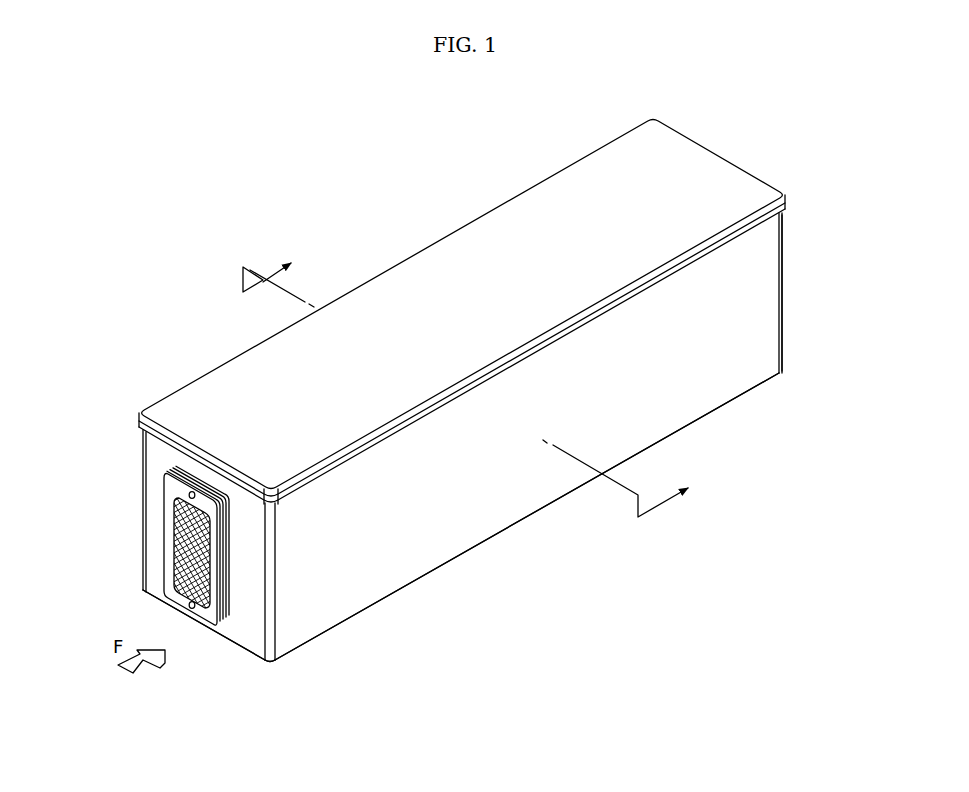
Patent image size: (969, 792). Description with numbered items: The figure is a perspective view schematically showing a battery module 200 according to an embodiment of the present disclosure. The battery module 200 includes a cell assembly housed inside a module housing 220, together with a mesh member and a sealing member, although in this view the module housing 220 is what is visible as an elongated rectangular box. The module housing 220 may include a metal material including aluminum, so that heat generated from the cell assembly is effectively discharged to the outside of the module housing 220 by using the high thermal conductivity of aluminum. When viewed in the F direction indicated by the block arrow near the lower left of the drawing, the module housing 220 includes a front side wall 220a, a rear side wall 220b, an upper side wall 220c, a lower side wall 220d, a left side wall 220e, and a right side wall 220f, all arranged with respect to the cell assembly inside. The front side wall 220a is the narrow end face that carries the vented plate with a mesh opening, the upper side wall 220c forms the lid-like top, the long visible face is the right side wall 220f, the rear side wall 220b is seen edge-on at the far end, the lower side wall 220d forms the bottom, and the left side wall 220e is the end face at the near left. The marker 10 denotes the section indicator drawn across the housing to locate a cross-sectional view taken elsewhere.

The battery module 200 is at (270, 109).
The module housing 220 is at (709, 139).
The front side wall 220a is at (247, 623).
The rear side wall 220b is at (782, 285).
The upper side wall 220c is at (480, 243).
The lower side wall 220d is at (420, 582).
The left side wall 220e is at (143, 480).
The right side wall 220f is at (482, 517).
The section line indicator 10 is at (487, 377).